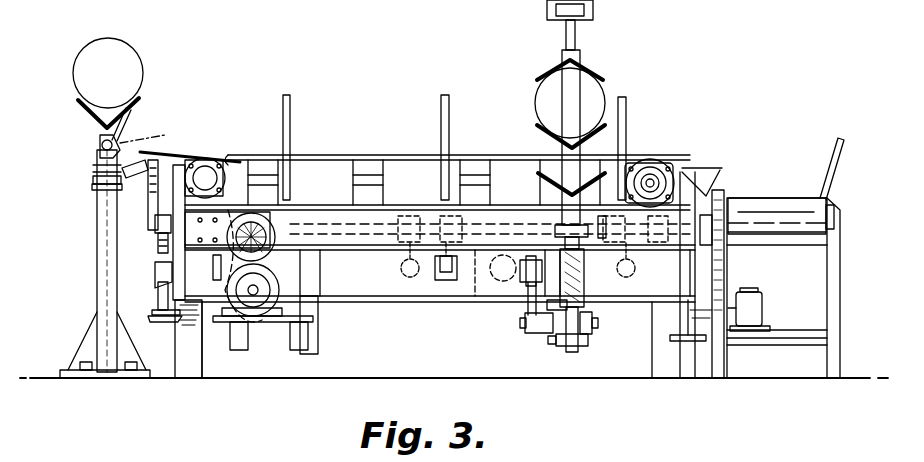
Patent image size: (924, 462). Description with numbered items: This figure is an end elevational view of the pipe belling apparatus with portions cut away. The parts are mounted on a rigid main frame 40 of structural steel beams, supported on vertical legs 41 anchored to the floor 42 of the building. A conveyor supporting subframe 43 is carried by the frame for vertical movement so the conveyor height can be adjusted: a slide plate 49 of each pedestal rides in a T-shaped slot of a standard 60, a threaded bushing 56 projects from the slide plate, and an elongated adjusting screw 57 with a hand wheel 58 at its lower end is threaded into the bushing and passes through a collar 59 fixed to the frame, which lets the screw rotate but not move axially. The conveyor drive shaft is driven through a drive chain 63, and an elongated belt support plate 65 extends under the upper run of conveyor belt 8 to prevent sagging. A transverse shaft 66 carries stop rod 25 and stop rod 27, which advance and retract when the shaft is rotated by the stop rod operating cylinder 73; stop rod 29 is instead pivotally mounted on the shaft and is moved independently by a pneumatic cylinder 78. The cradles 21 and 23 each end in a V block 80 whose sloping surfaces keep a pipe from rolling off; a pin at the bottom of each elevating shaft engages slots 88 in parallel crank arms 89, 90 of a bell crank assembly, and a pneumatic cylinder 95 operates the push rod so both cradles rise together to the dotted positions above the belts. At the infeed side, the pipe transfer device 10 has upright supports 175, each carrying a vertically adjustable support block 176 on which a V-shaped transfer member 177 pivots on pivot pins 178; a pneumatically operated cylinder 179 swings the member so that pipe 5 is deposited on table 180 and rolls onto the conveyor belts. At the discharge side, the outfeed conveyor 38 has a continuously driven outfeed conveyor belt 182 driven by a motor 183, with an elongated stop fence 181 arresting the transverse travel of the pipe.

The pipe 5 is at (108, 50).
The conveyor belt 8 is at (270, 156).
The pipe transfer device 10 is at (82, 148).
The cradle 21 is at (538, 185).
The cradle 23 is at (588, 62).
The stop rod 25 is at (288, 96).
The stop rod 27 is at (446, 112).
The stop rod 29 is at (625, 100).
The outfeed conveyor 38 is at (797, 190).
The main frame 40 is at (390, 303).
The vertical legs 41 is at (196, 357).
The floor 42 is at (186, 380).
The conveyor supporting subframe 43 is at (322, 334).
The slide plate 49 is at (655, 300).
The threaded bushing 56 is at (158, 248).
The adjusting screw 57 is at (158, 305).
The hand wheel 58 is at (175, 339).
The collar 59 is at (156, 272).
The standard 60 is at (155, 222).
The drive chain 63 is at (636, 160).
The belt support plate 65 is at (382, 146).
The shaft 66 is at (330, 232).
The stop rod operating cylinder 73 is at (420, 276).
The pneumatic cylinder 78 is at (612, 248).
The V block 80 is at (550, 170).
The slots 88 is at (586, 345).
The crank arm 89 is at (548, 333).
The crank arm 90 is at (586, 334).
The pneumatic cylinder 95 is at (495, 282).
The upright support 175 is at (100, 292).
The support block 176 is at (69, 191).
The V-shaped transfer member 177 is at (78, 100).
The pivot pins 178 is at (100, 142).
The pneumatically operated cylinder 179 is at (150, 185).
The table 180 is at (230, 147).
The stop fence 181 is at (838, 140).
The outfeed conveyor belt 182 is at (770, 200).
The motor 183 is at (754, 300).